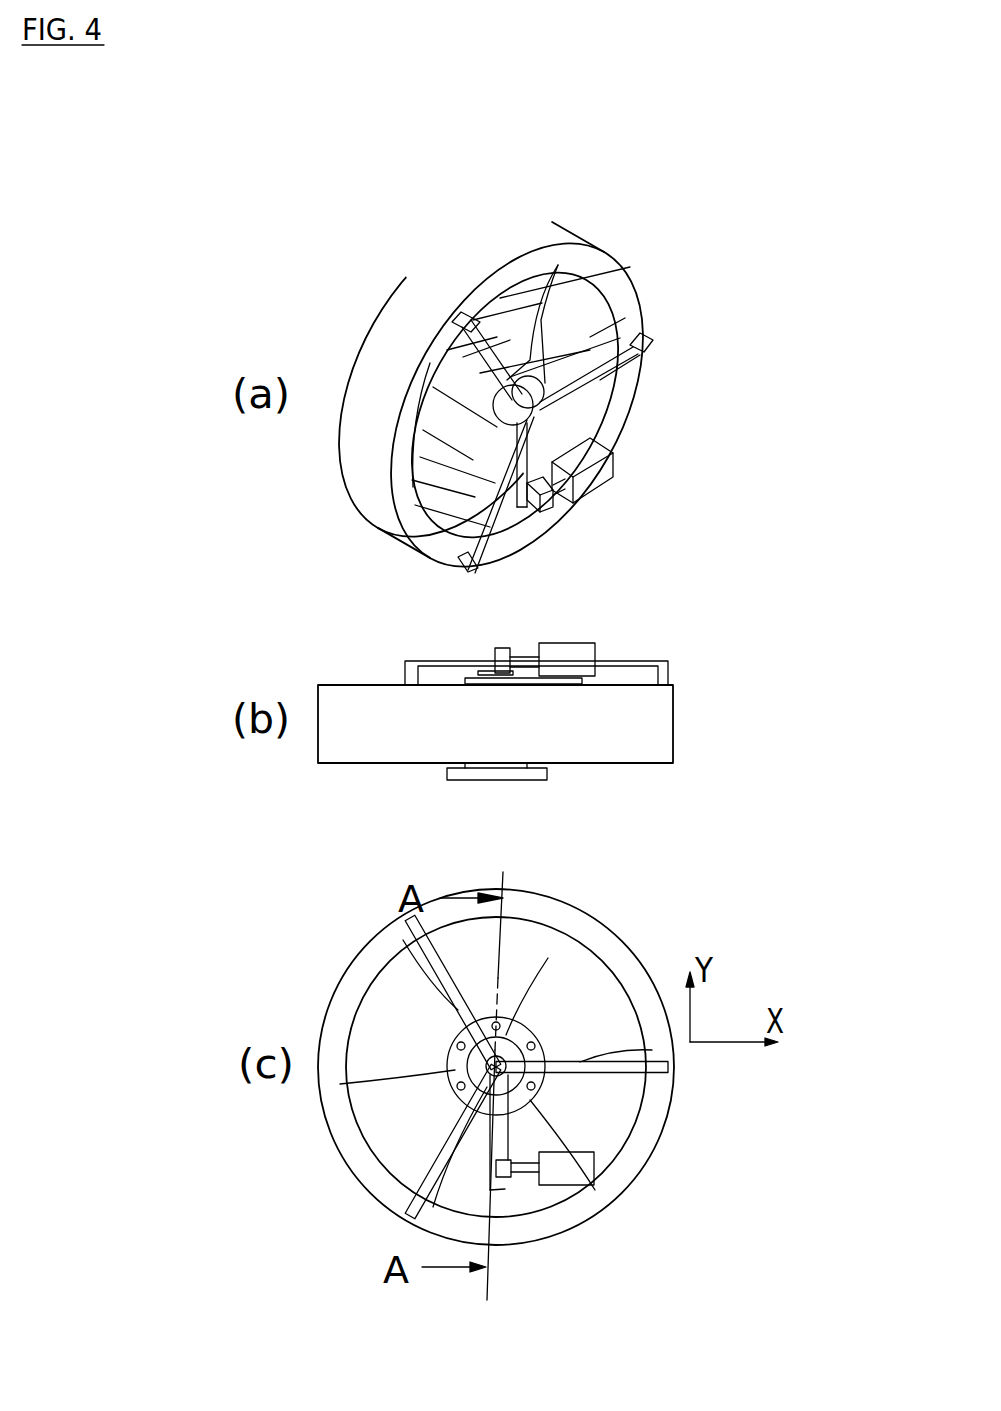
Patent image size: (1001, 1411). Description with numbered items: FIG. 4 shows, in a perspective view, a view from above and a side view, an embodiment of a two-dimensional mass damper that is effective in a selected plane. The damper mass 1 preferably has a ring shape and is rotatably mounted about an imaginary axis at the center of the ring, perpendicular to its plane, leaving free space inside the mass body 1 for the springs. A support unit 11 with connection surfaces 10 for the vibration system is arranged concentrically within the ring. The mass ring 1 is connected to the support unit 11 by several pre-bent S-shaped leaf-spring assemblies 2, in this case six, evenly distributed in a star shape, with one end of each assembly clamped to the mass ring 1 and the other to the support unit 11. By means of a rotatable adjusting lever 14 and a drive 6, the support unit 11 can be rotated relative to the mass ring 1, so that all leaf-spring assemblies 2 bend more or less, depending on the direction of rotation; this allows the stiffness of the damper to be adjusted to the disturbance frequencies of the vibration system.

The damper mass 1 is at (540, 242).
The leaf-spring assemblies 2 is at (548, 365).
The drive 6 is at (553, 493).
The connection surfaces 10 is at (533, 775).
The support unit 11 is at (458, 385).
The adjusting lever 14 is at (605, 353).